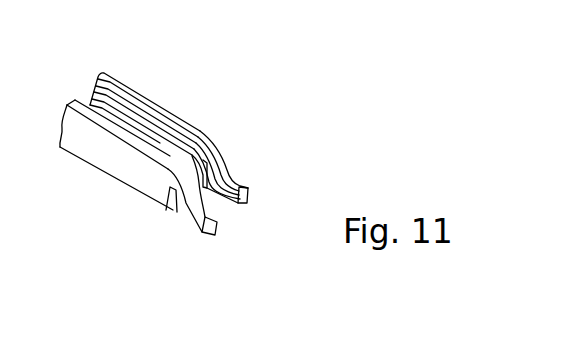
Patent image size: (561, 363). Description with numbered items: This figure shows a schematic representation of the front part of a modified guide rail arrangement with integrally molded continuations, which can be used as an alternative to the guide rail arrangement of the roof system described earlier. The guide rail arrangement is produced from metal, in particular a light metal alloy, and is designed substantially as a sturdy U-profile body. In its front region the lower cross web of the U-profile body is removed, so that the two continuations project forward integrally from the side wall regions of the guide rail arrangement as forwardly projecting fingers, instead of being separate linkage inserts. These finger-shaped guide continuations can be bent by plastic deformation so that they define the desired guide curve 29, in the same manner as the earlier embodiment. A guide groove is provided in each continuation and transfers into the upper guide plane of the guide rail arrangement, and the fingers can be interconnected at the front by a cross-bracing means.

The guide curve 29 is at (231, 204).